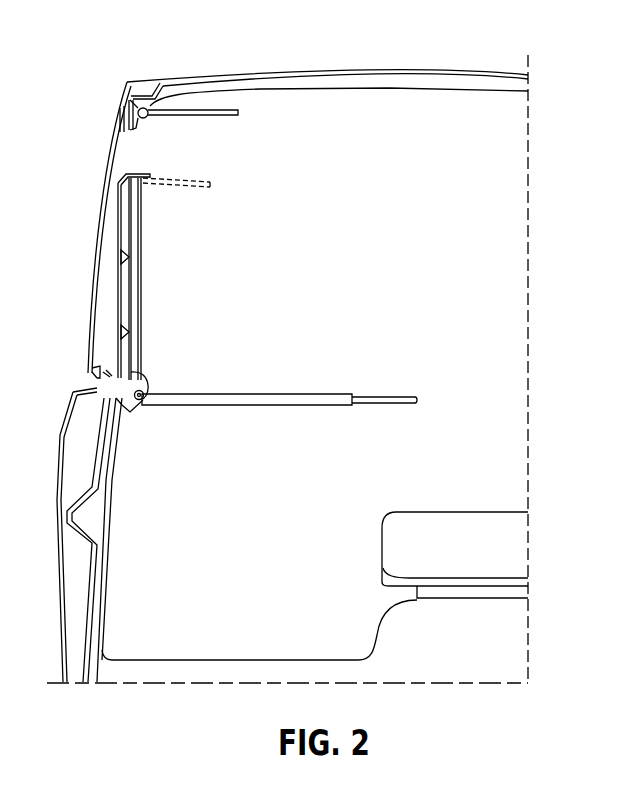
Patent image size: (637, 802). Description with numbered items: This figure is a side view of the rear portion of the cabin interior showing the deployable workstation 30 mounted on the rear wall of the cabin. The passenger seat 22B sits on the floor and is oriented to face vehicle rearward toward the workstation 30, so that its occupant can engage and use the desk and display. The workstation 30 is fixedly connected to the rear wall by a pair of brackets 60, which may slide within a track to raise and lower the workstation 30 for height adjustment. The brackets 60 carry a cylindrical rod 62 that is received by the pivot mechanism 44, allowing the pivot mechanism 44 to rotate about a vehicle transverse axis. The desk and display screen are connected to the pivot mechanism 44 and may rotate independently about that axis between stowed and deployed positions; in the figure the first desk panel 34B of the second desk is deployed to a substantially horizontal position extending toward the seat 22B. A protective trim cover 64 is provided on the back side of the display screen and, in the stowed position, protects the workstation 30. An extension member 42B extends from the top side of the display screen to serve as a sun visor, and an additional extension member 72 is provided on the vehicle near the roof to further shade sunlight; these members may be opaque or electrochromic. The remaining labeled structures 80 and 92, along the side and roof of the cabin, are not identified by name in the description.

The roof panel 92 is at (423, 72).
The pillar outer panel 80 is at (96, 232).
The extension member 72 is at (207, 110).
The protective trim cover 64 is at (122, 178).
The extension member 42B is at (205, 184).
The deployable workstation 30 is at (211, 327).
The first desk panel 34B is at (305, 393).
The pivot mechanism 44 is at (133, 414).
The cylindrical rod 62 is at (133, 370).
The brackets 60 is at (120, 395).
The passenger seat 22B is at (470, 512).